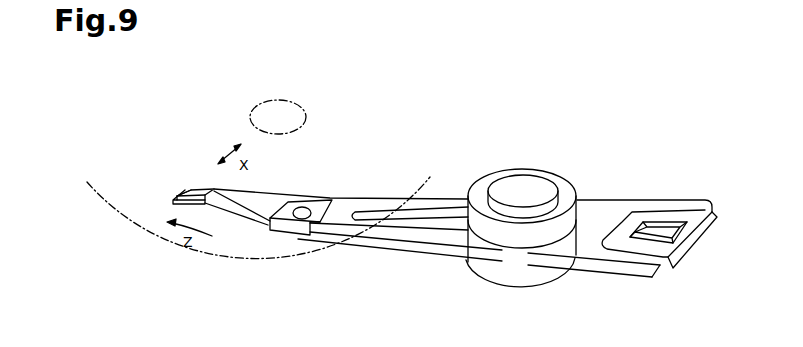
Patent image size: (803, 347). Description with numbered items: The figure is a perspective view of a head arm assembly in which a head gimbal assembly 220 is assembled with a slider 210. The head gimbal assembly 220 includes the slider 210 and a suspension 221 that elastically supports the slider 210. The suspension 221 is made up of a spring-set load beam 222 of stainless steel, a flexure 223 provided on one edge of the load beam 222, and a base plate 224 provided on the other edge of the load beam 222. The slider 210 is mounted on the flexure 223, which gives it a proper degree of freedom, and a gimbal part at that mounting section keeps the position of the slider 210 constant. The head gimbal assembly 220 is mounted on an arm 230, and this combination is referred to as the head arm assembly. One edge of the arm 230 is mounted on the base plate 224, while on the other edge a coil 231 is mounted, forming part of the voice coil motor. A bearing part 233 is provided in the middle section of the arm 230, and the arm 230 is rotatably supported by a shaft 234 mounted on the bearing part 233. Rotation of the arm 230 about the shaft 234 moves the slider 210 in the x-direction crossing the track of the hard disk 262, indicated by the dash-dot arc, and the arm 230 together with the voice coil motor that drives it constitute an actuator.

The slider 210 is at (192, 188).
The head gimbal assembly 220 is at (263, 234).
The suspension 221 is at (265, 173).
The load beam 222 is at (277, 203).
The flexure 223 is at (175, 198).
The base plate 224 is at (325, 202).
The arm 230 is at (379, 238).
The coil 231 is at (701, 247).
The bearing part 233 is at (480, 182).
The shaft 234 is at (530, 185).
The hard disk 262 is at (205, 254).